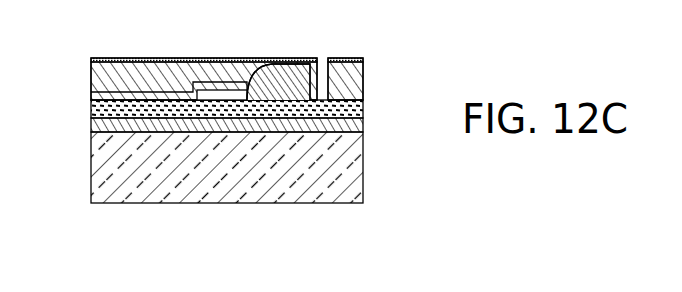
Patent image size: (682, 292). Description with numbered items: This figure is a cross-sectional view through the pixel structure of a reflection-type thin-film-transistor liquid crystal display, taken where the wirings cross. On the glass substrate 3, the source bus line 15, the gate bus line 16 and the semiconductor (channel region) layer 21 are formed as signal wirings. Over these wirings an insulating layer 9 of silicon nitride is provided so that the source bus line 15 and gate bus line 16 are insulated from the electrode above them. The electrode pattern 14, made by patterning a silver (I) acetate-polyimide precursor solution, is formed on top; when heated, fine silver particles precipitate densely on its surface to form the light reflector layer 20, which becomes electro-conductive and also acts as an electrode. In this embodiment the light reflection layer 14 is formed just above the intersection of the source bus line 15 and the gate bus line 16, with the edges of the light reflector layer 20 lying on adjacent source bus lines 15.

The glass substrate 3 is at (247, 200).
The insulating layer 9 is at (365, 107).
The electrode pattern 14 is at (128, 72).
The source bus line 15 is at (150, 96).
The gate bus line 16 is at (97, 128).
The light reflector layer 20 is at (203, 60).
The semiconductor (channel region) layer 21 is at (268, 65).